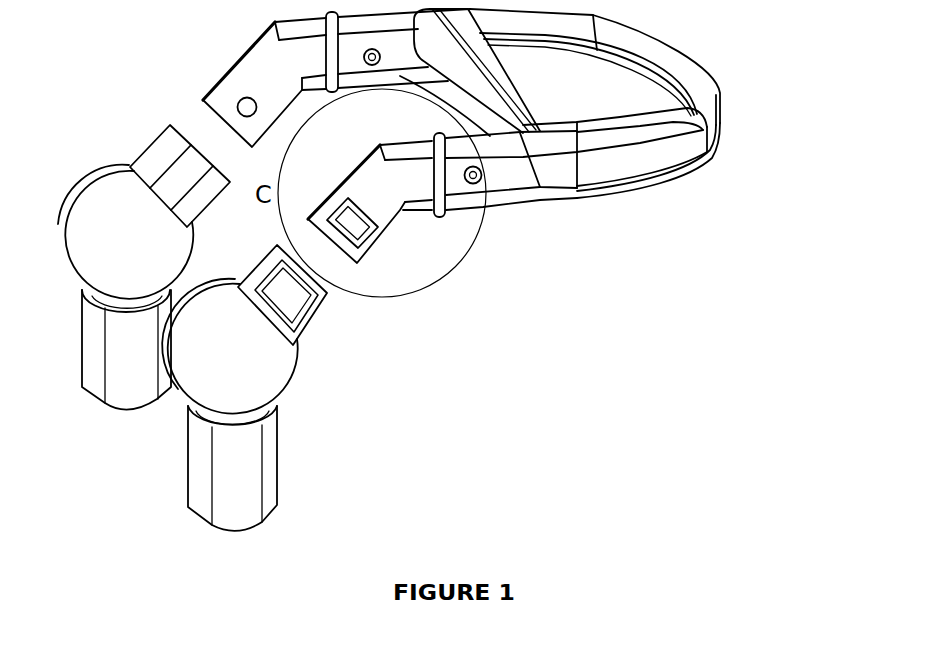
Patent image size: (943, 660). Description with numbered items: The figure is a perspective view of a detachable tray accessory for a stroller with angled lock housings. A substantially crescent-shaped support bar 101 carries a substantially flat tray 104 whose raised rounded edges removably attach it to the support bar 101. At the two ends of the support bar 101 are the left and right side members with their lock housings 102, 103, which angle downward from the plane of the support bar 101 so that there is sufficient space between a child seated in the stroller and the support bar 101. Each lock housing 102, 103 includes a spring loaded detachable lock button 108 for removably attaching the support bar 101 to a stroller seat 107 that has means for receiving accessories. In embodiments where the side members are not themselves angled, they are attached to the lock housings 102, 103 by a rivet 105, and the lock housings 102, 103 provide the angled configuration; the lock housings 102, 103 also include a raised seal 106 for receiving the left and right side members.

The support bar 101 is at (510, 190).
The left side member and lock housing 102 is at (277, 72).
The right side member and lock housing 103 is at (505, 311).
The tray 104 is at (663, 153).
The rivet 105 is at (483, 203).
The raised seal 106 is at (450, 207).
The stroller seat 107 is at (252, 372).
The spring loaded detachable lock button 108 is at (350, 240).